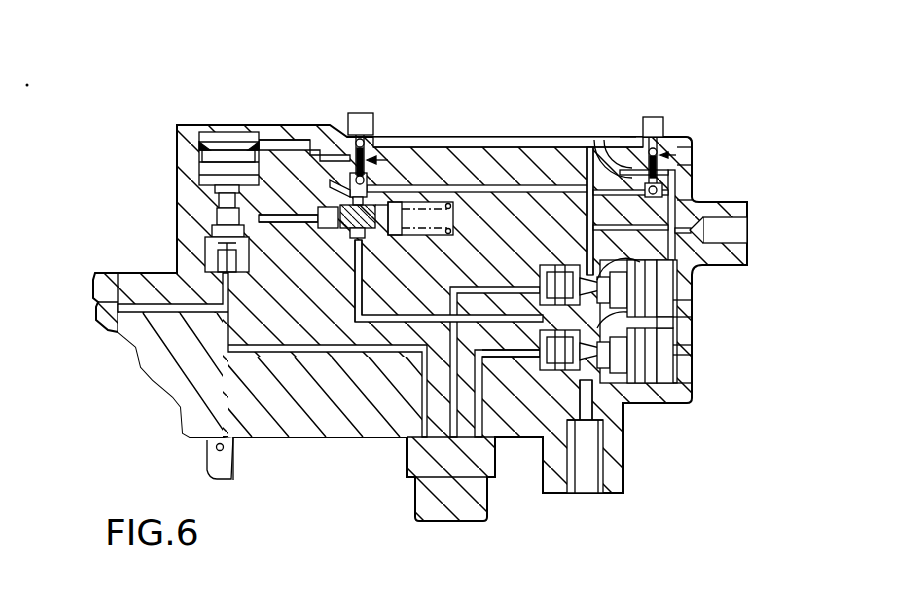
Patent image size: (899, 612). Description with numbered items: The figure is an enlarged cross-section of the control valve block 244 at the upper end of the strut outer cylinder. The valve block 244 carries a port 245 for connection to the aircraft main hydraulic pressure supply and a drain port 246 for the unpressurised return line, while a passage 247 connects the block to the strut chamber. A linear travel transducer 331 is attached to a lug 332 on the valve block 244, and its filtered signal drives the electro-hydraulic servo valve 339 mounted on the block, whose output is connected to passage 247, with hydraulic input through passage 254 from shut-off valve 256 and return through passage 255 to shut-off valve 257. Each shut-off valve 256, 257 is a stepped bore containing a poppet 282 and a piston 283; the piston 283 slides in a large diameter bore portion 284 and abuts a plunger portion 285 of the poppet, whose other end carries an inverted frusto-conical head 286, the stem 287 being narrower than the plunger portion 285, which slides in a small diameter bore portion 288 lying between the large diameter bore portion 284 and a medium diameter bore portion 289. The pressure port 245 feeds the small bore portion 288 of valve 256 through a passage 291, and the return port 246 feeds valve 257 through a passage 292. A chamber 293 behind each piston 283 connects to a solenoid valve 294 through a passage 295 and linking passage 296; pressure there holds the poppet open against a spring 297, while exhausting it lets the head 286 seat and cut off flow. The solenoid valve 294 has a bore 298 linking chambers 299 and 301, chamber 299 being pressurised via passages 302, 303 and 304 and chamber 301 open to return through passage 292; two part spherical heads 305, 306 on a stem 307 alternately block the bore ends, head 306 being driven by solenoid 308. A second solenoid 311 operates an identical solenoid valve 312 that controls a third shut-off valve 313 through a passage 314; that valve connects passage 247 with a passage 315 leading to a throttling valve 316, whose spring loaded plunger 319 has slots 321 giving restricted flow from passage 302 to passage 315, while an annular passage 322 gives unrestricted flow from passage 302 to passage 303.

The valve block 244 is at (705, 163).
The port 245 is at (592, 473).
The drain port 246 is at (737, 233).
The passage 247 is at (155, 273).
The passage 254 is at (503, 440).
The passage 255 is at (433, 440).
The shut-off valve 256 is at (640, 403).
The shut-off valve 257 is at (693, 278).
The poppet 282 is at (582, 385).
The piston 283 is at (700, 367).
The large diameter bore portion 284 is at (700, 382).
The plunger portion 285 is at (700, 347).
The inverted frusto-conical head 286 is at (553, 395).
The stem 287 is at (633, 418).
The small diameter bore portion 288 is at (700, 305).
The medium diameter bore portion 289 is at (540, 385).
The passage 291 is at (630, 415).
The passage 292 is at (591, 147).
The chamber 293 is at (700, 355).
The solenoid valve 294 is at (685, 148).
The passage 295 is at (695, 195).
The linking passage 296 is at (698, 318).
The spring 297 is at (548, 378).
The bore 298 is at (630, 135).
The chamber 299 is at (628, 138).
The chamber 301 is at (686, 135).
The passage 302 is at (383, 317).
The passage 303 is at (350, 197).
The passage 304 is at (525, 180).
The part spherical head 305 is at (700, 172).
The part spherical head 306 is at (700, 130).
The stem 307 is at (701, 161).
The solenoid 308 is at (670, 118).
The solenoid 311 is at (362, 113).
The solenoid valve 312 is at (376, 160).
The shut-off valve 313 is at (197, 162).
The passage 314 is at (298, 135).
The passage 315 is at (327, 218).
The throttling valve 316 is at (453, 220).
The spring loaded plunger 319 is at (381, 205).
The slots 321 is at (302, 276).
The annular passage 322 is at (360, 238).
The linear travel transducer 331 is at (228, 468).
The lug 332 is at (238, 440).
The electro-hydraulic servo valve 339 is at (430, 496).